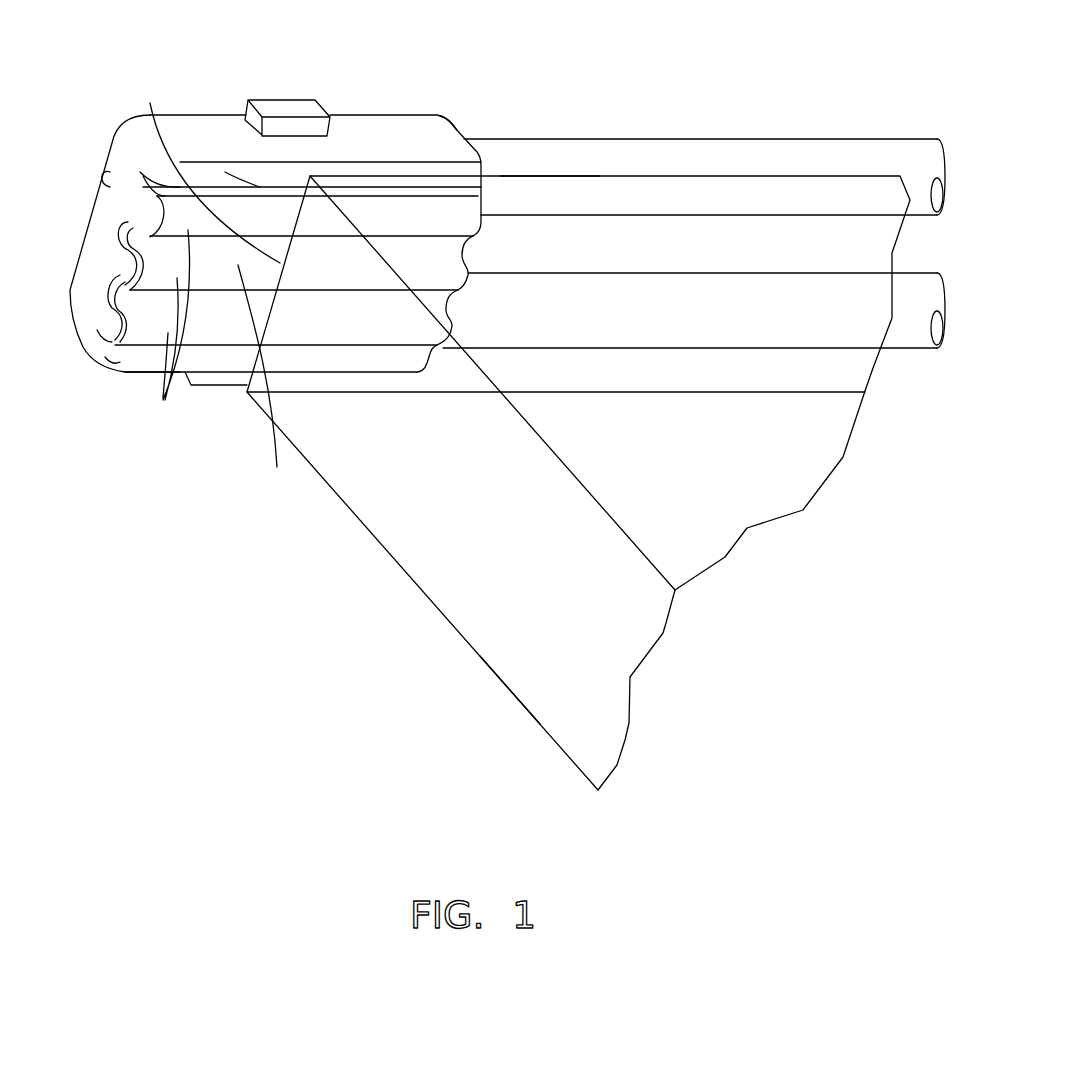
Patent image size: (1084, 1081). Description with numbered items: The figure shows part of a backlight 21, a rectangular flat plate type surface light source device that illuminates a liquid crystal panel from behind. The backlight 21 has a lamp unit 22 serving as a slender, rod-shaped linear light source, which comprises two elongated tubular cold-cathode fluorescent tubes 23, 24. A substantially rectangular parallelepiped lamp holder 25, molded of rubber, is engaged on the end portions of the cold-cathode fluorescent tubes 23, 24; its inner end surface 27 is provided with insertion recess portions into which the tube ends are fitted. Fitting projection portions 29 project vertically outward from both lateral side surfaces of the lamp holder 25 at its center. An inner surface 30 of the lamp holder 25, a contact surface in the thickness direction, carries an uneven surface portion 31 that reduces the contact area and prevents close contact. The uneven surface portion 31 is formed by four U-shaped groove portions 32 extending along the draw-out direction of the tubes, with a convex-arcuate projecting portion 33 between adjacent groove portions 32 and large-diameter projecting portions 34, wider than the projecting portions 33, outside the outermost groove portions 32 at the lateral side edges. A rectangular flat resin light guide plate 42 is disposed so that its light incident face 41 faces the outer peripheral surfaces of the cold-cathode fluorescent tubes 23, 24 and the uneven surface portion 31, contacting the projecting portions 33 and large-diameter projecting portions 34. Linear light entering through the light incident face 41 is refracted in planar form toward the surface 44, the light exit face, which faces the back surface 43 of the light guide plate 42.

The backlight 21 is at (684, 54).
The lamp unit 22 is at (413, 112).
The cold-cathode fluorescent tube 23 is at (665, 137).
The cold-cathode fluorescent tube 24 is at (800, 273).
The lamp holder 25 is at (180, 115).
The inner end surface 27 is at (459, 128).
The fitting projection portion 29 is at (302, 107).
The inner surface 30 is at (137, 366).
The uneven surface portion 31 is at (265, 380).
The groove portion 32 is at (108, 357).
The projecting portion 33 is at (168, 327).
The large-diameter projecting portion 34 is at (225, 172).
The light incident face 41 is at (207, 171).
The light guide plate 42 is at (434, 629).
The back surface 43 is at (508, 690).
The surface 44 is at (540, 183).